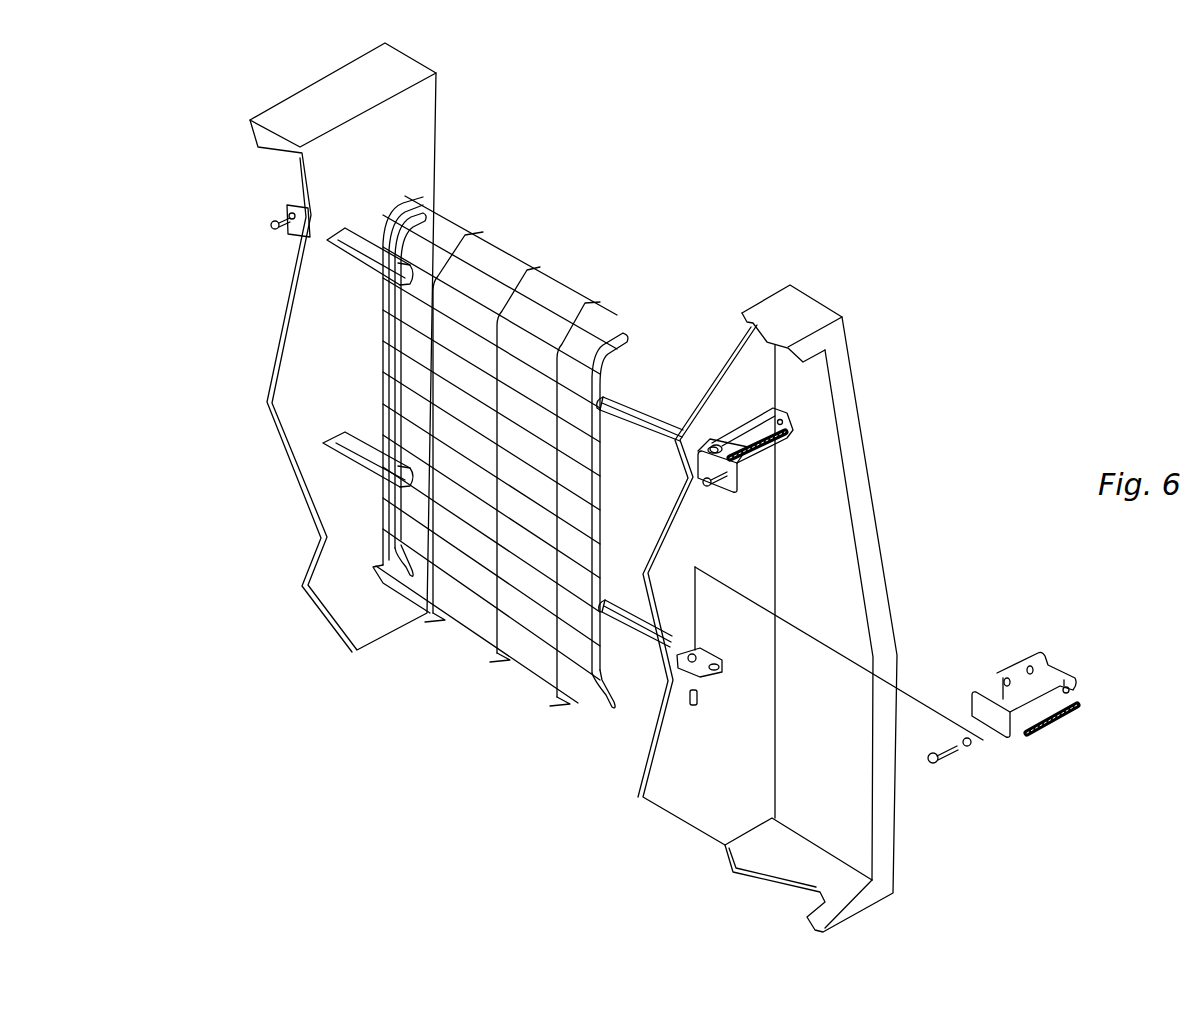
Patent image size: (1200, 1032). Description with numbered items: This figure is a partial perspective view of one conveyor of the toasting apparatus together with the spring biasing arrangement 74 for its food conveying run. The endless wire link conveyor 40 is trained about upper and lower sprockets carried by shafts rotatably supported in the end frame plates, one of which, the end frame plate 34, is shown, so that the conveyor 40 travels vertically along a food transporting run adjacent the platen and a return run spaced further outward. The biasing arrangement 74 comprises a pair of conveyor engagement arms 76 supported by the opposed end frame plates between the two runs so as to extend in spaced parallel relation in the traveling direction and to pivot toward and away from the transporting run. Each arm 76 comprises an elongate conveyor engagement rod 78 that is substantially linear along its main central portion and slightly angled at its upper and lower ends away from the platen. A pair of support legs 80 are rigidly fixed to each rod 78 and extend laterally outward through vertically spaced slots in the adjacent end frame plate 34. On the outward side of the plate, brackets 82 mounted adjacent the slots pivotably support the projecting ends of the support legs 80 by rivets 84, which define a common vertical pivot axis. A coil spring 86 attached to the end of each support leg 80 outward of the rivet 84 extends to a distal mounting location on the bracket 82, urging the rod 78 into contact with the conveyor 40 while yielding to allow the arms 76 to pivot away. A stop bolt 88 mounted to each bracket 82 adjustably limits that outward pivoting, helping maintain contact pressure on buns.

The end frame plate 34 is at (318, 348).
The endless wire link conveyor 40 is at (492, 609).
The biasing arrangement 74 is at (741, 406).
The conveyor engagement arm 76 is at (392, 386).
The conveyor engagement rod 78 is at (392, 320).
The support leg 80 is at (350, 240).
The bracket 82 is at (288, 206).
The rivet 84 is at (716, 446).
The coil spring 86 is at (755, 458).
The stop bolt 88 is at (709, 488).